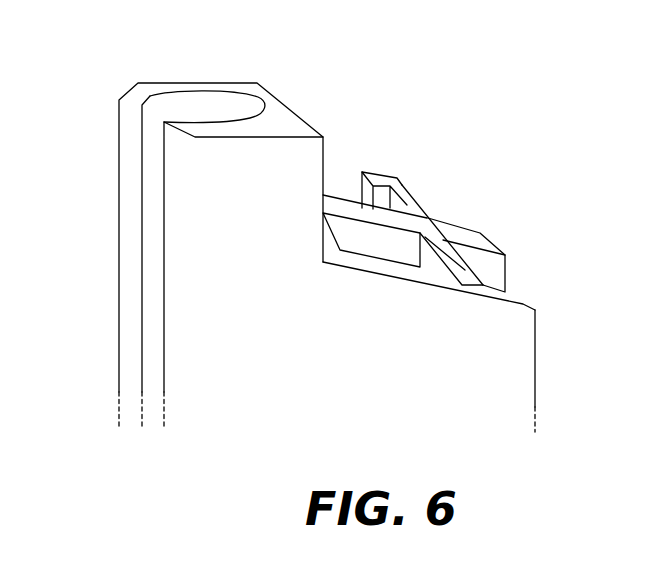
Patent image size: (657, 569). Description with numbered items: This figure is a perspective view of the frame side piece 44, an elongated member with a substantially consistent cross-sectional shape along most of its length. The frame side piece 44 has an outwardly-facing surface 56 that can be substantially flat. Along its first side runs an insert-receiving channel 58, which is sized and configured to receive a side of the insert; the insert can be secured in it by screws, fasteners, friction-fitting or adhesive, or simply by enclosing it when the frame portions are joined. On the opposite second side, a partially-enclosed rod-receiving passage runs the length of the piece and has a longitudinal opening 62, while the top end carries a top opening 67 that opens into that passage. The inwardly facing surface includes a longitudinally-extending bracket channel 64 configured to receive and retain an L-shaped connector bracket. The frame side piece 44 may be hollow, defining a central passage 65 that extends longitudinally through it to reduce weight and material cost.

The frame side piece 44 is at (485, 158).
The outwardly-facing surface 56 is at (508, 373).
The insert-receiving channel 58 is at (470, 265).
The longitudinal opening 62 is at (148, 262).
The bracket channel 64 is at (348, 202).
The central passage 65 is at (403, 238).
The top opening 67 is at (220, 98).